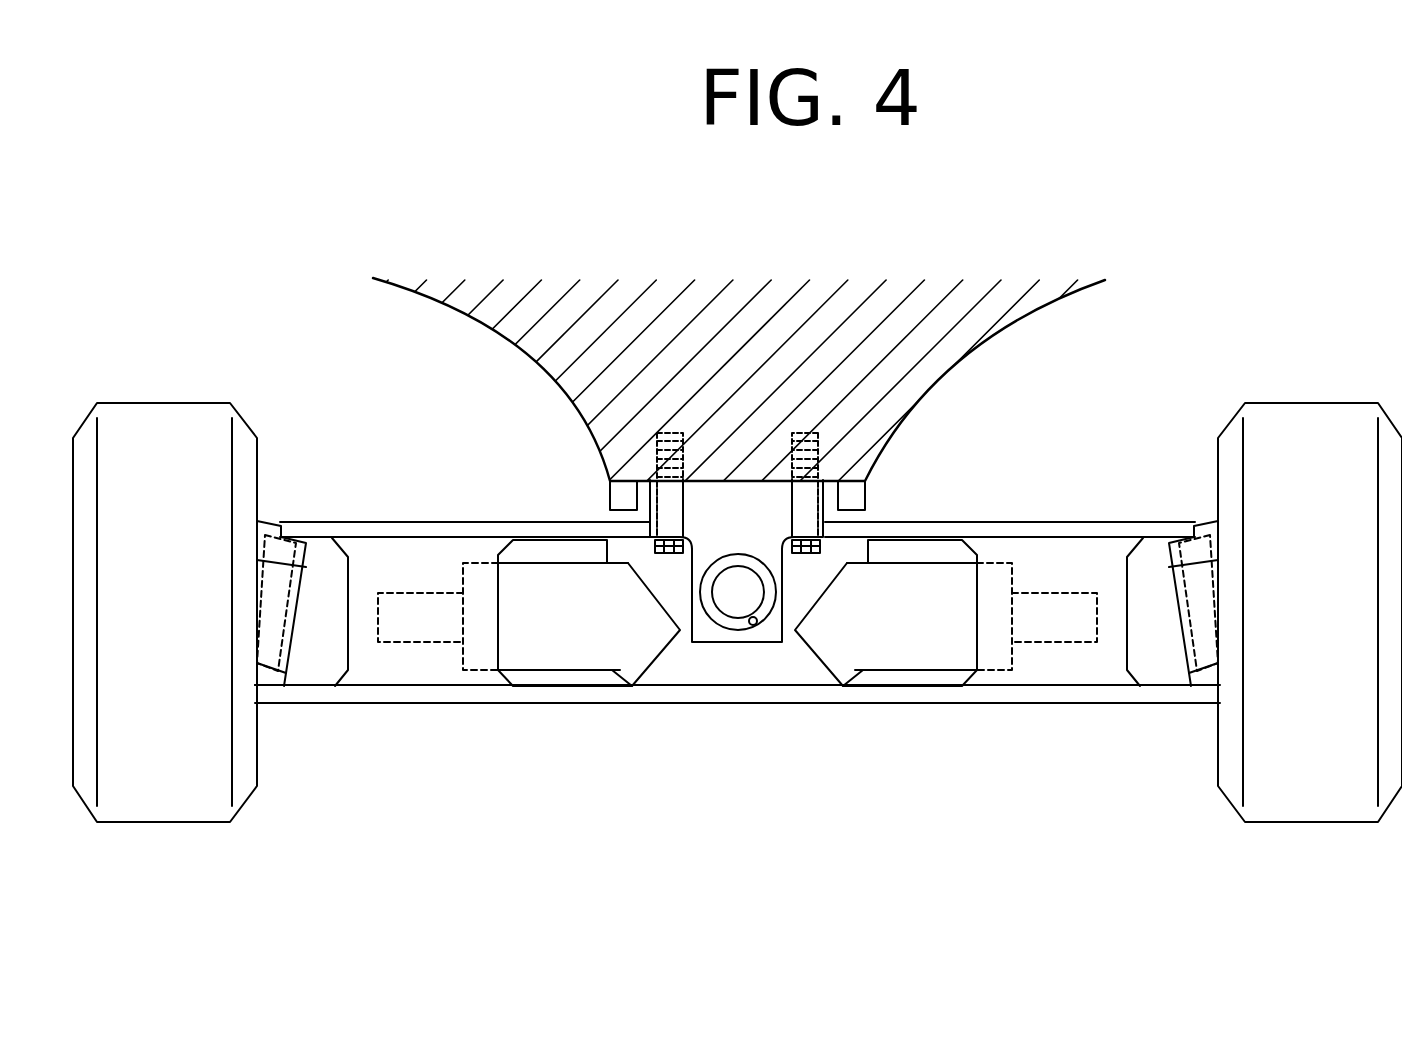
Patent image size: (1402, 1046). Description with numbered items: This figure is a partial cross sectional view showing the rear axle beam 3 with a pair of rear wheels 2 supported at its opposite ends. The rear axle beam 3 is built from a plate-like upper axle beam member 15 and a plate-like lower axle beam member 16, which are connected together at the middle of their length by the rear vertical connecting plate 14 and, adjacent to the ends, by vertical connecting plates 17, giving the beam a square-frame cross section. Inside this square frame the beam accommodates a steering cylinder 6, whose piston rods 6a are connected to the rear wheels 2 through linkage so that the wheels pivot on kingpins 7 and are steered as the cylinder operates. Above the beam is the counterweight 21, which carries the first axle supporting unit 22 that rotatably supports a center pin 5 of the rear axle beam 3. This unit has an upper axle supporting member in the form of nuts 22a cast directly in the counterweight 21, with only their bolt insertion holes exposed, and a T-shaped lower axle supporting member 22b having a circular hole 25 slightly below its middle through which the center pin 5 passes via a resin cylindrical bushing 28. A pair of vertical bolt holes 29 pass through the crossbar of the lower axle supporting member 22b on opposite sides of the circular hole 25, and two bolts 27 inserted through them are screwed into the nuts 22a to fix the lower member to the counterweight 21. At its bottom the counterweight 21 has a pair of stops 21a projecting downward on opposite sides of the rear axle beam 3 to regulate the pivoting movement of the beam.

The rear wheels 2 is at (167, 403).
The rear axle beam 3 is at (876, 706).
The center pins 5 is at (728, 607).
The steering cylinder 6 is at (557, 650).
The piston rods 6a is at (420, 643).
The kingpins 7 is at (295, 615).
The rear vertical connecting plate 14 is at (713, 703).
The upper axle beam member 15 is at (352, 532).
The lower axle beam member 16 is at (352, 704).
The vertical connecting plates 17 is at (412, 560).
The counterweight 21 is at (706, 376).
The stops 21a is at (612, 492).
The first axle supporting unit 22 is at (617, 460).
The nuts 22a is at (807, 435).
The lower axle supporting member 22b is at (783, 608).
The circular hole 25 is at (757, 625).
The bolts 27 is at (660, 555).
The cylindrical bushings 28 is at (738, 631).
The bolt holes 29 is at (822, 520).